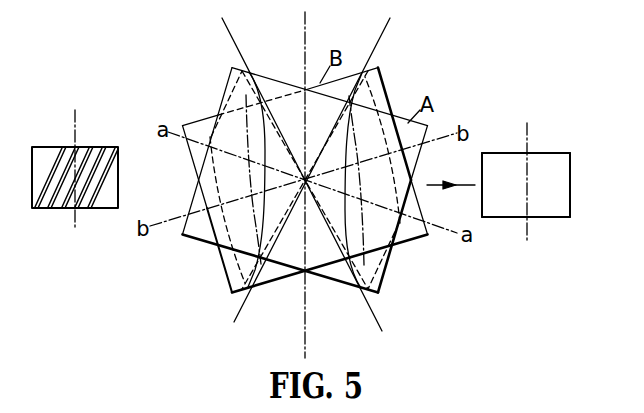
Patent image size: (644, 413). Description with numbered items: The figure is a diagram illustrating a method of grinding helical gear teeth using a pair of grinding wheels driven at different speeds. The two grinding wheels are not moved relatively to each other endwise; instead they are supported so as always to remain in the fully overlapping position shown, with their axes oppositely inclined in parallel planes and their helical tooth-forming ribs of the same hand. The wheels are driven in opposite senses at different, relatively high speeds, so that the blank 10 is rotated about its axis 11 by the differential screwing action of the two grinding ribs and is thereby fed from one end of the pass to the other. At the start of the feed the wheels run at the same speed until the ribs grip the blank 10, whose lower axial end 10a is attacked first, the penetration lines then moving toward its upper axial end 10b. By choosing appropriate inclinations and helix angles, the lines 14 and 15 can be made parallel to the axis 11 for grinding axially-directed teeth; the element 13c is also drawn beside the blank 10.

The blank 10 is at (548, 188).
The lower axial end 10a is at (560, 217).
The upper axial end 10b is at (553, 153).
The axis of the blank 11 is at (527, 140).
The hatched section element 13c is at (48, 147).
The line 14 is at (373, 53).
The line 15 is at (235, 42).